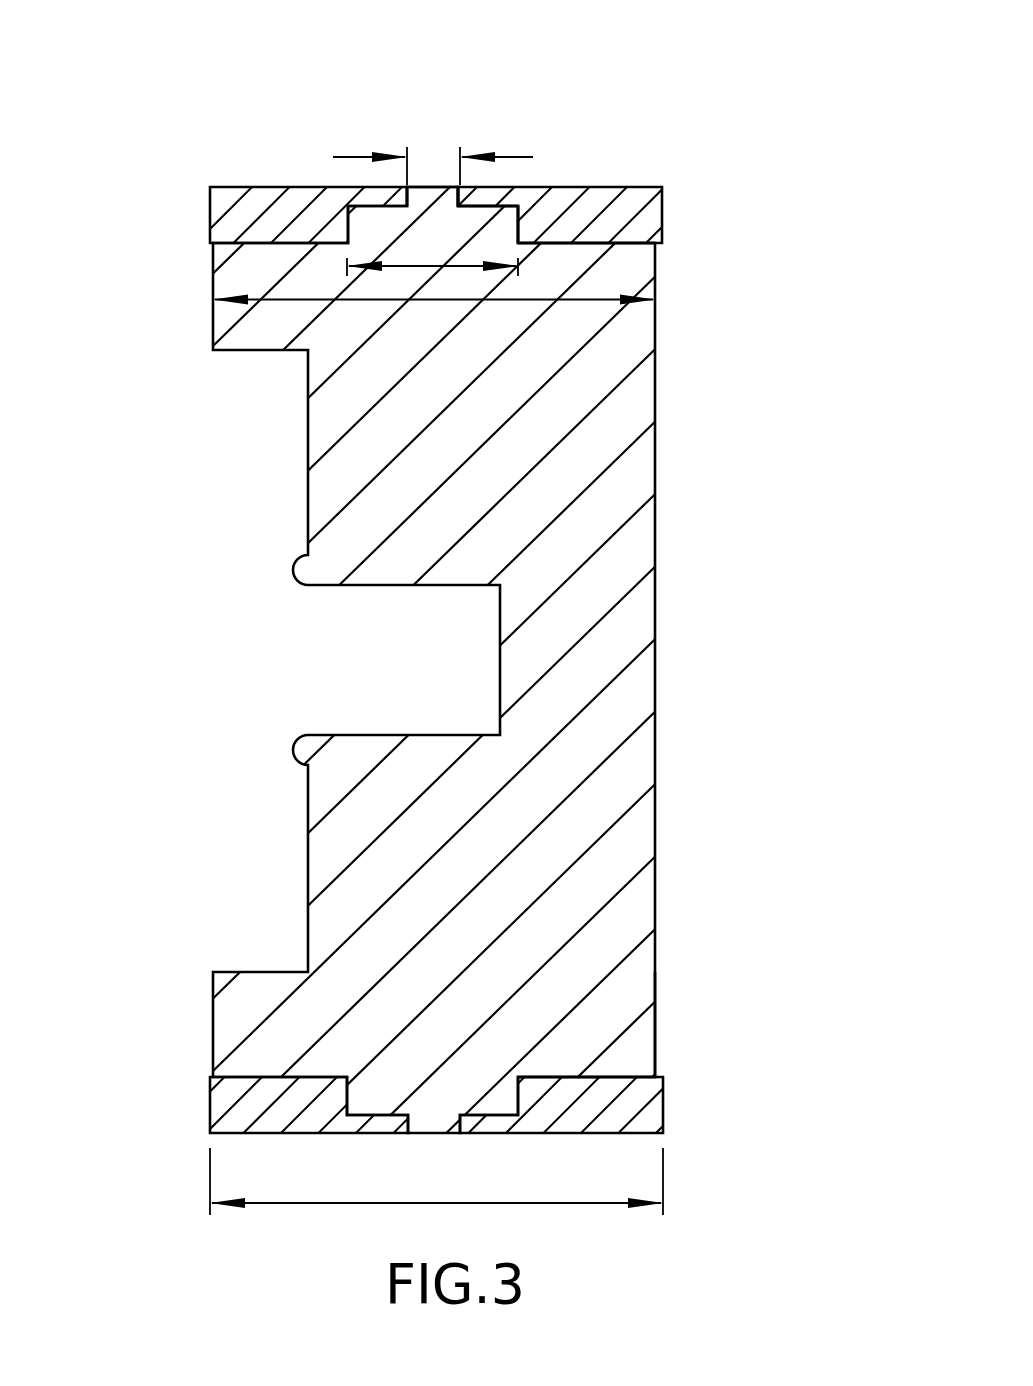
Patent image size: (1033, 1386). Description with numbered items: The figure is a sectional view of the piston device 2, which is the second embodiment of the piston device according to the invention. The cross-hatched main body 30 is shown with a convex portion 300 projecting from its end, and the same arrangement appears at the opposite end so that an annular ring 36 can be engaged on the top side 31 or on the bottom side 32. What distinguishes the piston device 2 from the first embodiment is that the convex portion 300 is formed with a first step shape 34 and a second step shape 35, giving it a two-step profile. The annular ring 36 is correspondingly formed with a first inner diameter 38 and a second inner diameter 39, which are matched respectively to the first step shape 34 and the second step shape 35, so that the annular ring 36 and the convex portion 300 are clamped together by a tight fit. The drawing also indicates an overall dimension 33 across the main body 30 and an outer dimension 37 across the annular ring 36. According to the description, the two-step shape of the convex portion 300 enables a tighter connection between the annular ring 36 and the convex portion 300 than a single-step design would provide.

The piston device 2 is at (88, 1230).
The barrel body 30 is at (654, 683).
The convex portion 300 is at (447, 185).
The top side 31 is at (592, 242).
The bottom side 32 is at (618, 1070).
The outer diameter of body 33 is at (630, 298).
The first step shape 34 is at (470, 190).
The second step shape 35 is at (502, 230).
The annular ring 36 is at (210, 218).
The outer diameter of flange 37 is at (663, 1180).
The first inner diameter 38 is at (460, 148).
The second inner diameter 39 is at (518, 262).